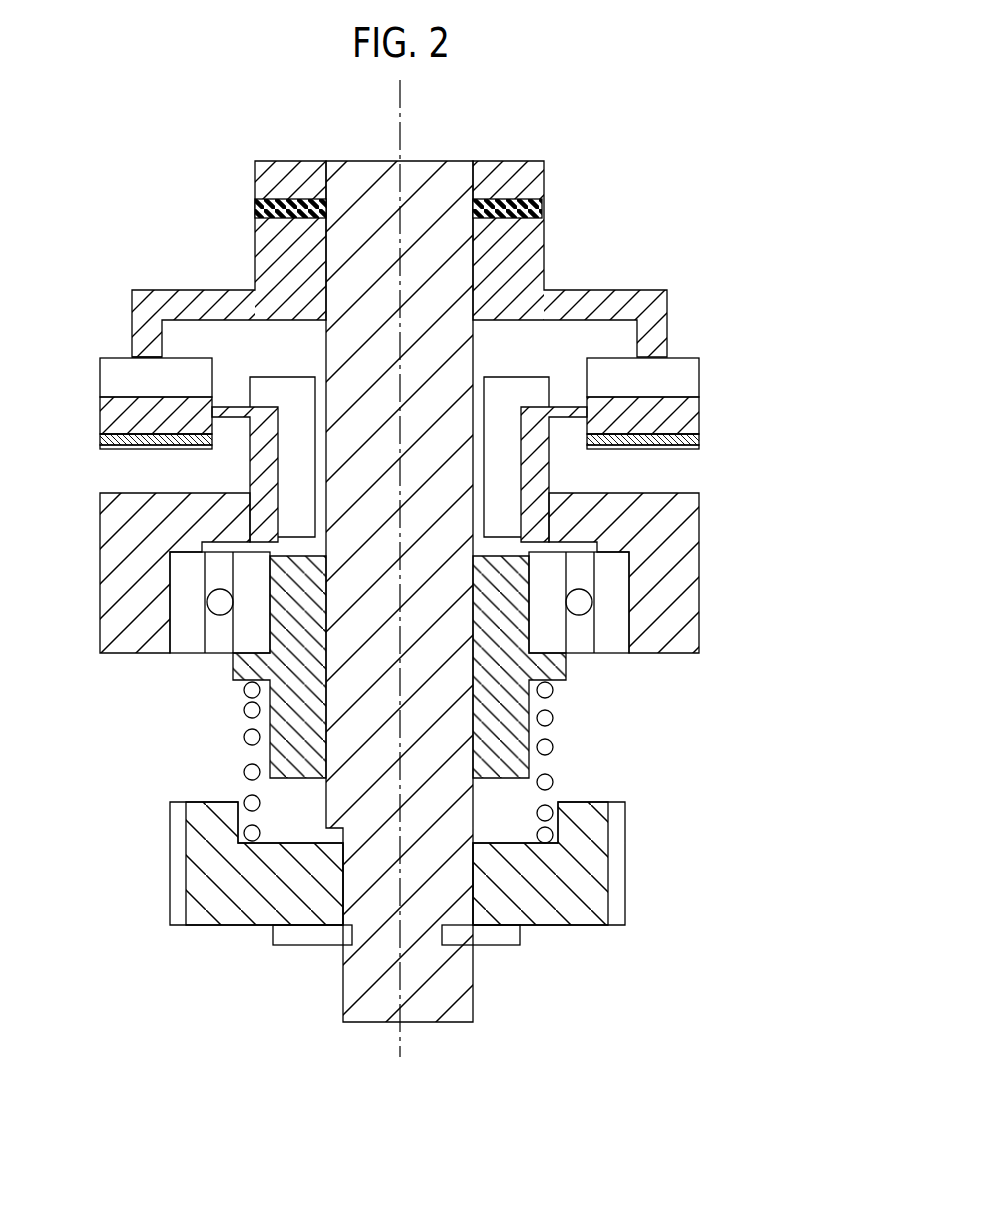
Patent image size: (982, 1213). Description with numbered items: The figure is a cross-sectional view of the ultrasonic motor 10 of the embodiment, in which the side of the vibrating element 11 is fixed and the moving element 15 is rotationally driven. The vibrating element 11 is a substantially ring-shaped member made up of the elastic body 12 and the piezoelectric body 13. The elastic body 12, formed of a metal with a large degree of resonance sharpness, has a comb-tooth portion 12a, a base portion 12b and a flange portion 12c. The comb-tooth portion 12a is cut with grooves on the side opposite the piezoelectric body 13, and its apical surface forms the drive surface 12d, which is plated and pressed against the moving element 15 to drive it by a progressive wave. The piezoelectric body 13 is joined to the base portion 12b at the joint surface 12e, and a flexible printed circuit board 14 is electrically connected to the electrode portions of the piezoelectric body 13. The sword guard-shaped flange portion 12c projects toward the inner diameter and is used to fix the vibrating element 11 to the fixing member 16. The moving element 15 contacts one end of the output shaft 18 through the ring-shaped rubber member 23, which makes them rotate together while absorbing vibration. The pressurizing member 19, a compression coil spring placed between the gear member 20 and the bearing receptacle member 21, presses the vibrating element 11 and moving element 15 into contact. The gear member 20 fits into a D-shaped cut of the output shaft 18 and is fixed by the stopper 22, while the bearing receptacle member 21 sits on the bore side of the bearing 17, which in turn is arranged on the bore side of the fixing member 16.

The ultrasonic motor 10 is at (699, 166).
The vibrating element 11 is at (455, 417).
The elastic body 12 is at (435, 417).
The comb-tooth portion 12a is at (678, 378).
The base portion 12b is at (690, 412).
The flange portion 12c is at (560, 415).
The drive surface 12d is at (127, 356).
The joint surface 12e is at (117, 439).
The piezoelectric body 13 is at (690, 441).
The flexible printed circuit board 14 is at (138, 452).
The moving element 15 is at (537, 259).
The fixing member 16 is at (678, 547).
The bearing 17 is at (608, 645).
The output shaft 18 is at (453, 245).
The pressurizing member 19 is at (553, 745).
The gear member 20 is at (584, 918).
The bearing receptacle member 21 is at (263, 667).
The stopper 22 is at (507, 940).
The rubber member 23 is at (262, 208).